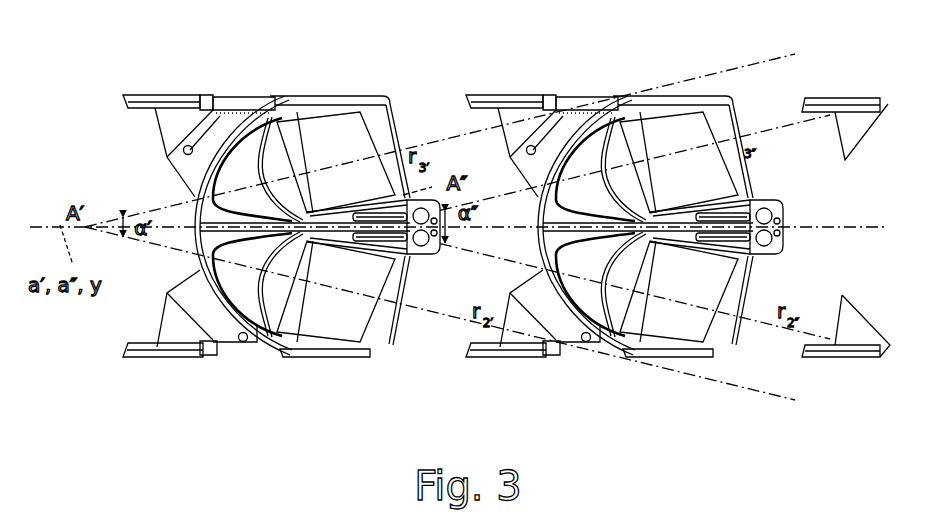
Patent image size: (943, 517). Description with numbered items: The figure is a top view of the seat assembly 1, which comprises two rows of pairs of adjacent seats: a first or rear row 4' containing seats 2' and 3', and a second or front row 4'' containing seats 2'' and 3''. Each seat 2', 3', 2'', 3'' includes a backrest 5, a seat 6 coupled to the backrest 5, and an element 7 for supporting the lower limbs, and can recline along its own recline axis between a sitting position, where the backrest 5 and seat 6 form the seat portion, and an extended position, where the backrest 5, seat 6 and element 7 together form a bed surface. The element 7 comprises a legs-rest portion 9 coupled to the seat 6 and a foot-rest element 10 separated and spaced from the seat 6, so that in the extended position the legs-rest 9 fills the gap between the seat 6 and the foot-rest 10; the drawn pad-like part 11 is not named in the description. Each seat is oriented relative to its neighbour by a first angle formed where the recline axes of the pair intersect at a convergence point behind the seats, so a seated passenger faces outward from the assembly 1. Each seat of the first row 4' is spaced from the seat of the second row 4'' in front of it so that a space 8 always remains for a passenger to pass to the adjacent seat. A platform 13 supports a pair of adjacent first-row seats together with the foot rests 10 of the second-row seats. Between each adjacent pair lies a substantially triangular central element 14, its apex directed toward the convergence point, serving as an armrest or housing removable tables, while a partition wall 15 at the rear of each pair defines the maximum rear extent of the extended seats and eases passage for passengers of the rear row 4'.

The assembly 1 is at (492, 43).
The seat 2' is at (400, 387).
The seat 2'' is at (737, 379).
The seat 3' is at (396, 74).
The seat 3'' is at (760, 53).
The first row 4' is at (284, 412).
The second row 4'' is at (633, 419).
The backrest 5 is at (284, 118).
The seat 6 is at (323, 130).
The element for supporting the lower limbs 7 is at (437, 116).
The space 8 is at (547, 140).
The legs-rest portion 9 is at (393, 128).
The foot-rest element 10 is at (532, 118).
The foot pad 11 is at (138, 97).
The platform 13 is at (228, 105).
The central element 14 is at (412, 247).
The partition wall 15 is at (197, 250).